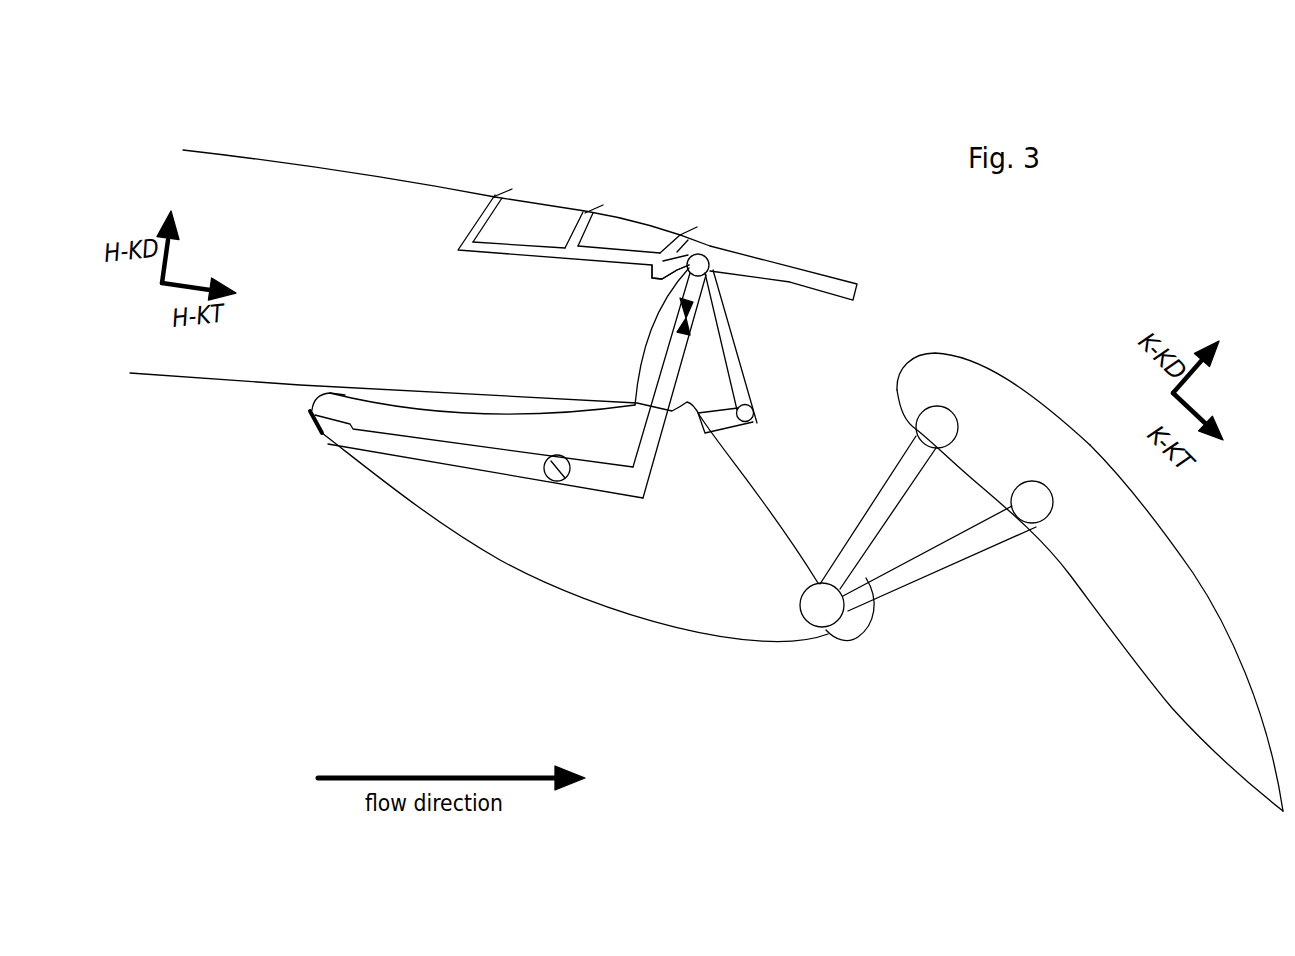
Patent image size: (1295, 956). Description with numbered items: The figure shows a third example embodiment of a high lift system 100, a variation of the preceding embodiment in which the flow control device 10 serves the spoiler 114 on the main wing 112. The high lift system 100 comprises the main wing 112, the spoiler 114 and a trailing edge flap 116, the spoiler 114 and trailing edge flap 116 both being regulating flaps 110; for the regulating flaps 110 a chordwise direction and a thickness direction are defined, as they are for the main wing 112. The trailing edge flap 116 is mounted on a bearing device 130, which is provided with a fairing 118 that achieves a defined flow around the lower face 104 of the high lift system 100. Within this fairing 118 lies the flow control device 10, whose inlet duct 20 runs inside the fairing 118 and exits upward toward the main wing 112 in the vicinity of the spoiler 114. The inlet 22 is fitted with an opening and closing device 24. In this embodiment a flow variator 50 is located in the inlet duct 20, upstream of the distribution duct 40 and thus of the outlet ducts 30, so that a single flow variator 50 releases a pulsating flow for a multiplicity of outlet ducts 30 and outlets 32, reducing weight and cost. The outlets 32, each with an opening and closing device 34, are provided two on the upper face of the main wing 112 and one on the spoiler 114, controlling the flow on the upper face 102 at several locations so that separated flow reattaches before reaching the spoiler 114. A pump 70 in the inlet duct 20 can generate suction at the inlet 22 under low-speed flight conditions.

The flow control device 10 is at (534, 509).
The inlet duct 20 is at (648, 457).
The inlet 22 is at (327, 438).
The inlet opening and closing device 24 is at (311, 412).
The outlet duct 30 is at (563, 254).
The outlet 32 is at (477, 236).
The outlet opening and closing device 34 is at (495, 195).
The distribution duct 40 is at (652, 277).
The flow variator 50 is at (687, 325).
The pump 70 is at (557, 478).
The high lift system 100 is at (731, 133).
The upper face 102 is at (443, 168).
The lower face 104 is at (322, 563).
The regulating flap 110 is at (738, 248).
The main wing 112 is at (285, 178).
The spoiler 114 is at (792, 273).
The trailing edge flap 116 is at (1132, 564).
The fairing 118 is at (580, 596).
The bearing device 130 is at (845, 642).